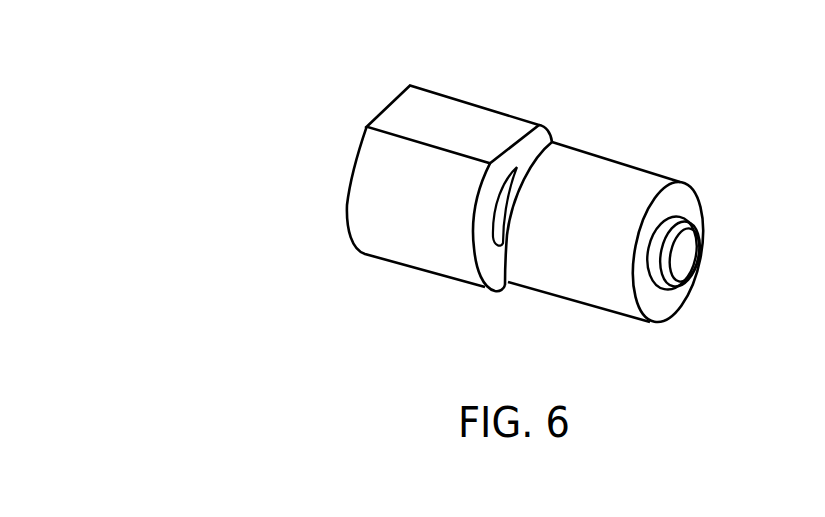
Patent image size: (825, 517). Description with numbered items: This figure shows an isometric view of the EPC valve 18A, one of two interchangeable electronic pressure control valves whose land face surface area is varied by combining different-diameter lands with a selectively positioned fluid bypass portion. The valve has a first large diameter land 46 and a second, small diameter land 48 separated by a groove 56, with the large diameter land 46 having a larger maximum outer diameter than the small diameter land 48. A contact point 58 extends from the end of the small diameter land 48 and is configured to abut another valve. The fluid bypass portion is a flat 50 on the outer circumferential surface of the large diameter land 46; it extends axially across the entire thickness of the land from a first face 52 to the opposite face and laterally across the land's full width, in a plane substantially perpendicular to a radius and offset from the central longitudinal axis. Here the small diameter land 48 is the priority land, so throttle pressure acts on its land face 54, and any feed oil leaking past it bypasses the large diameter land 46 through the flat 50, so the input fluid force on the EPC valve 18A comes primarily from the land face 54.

The EPC valve 18A is at (482, 62).
The large diameter land 46 is at (413, 267).
The small diameter land 48 is at (632, 167).
The flat 50 is at (407, 113).
The first face 52 is at (488, 270).
The land face 54 is at (647, 302).
The groove 56 is at (552, 117).
The contact point 58 is at (683, 258).